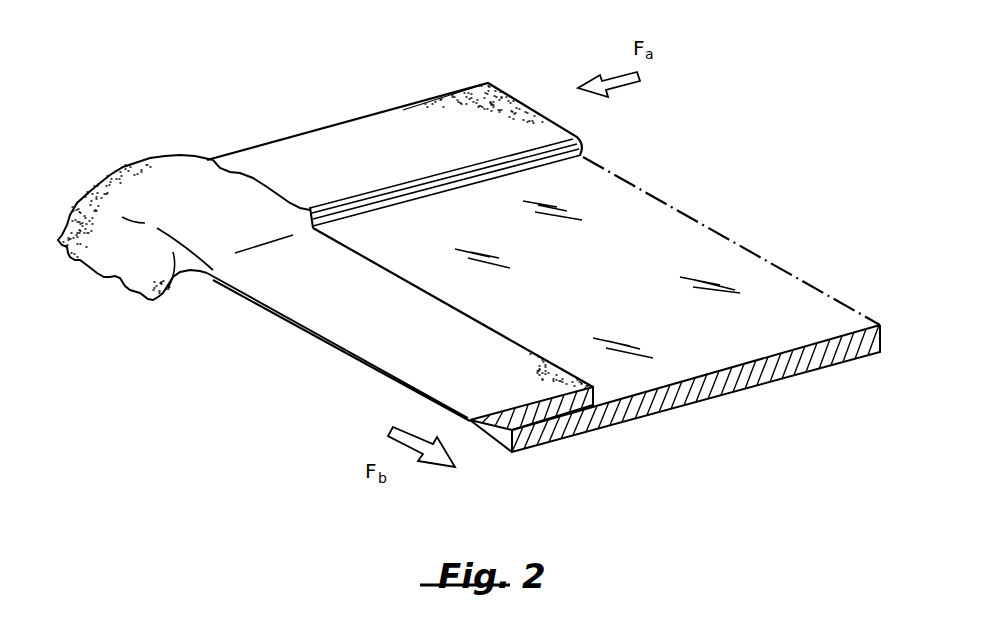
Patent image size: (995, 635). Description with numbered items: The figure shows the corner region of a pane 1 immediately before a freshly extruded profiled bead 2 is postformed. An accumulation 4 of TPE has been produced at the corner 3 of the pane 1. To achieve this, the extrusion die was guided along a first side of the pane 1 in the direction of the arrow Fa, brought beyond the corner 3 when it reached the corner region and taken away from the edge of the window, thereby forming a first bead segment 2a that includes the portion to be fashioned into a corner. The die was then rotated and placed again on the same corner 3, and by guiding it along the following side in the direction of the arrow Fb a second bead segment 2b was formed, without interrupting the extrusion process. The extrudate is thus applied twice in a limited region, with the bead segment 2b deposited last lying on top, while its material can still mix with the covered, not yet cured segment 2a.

The pane 1 is at (660, 217).
The profiled bead 2 is at (447, 80).
The first bead segment 2a is at (282, 137).
The second bead segment 2b is at (229, 285).
The corner 3 is at (100, 288).
The accumulation 4 is at (157, 175).